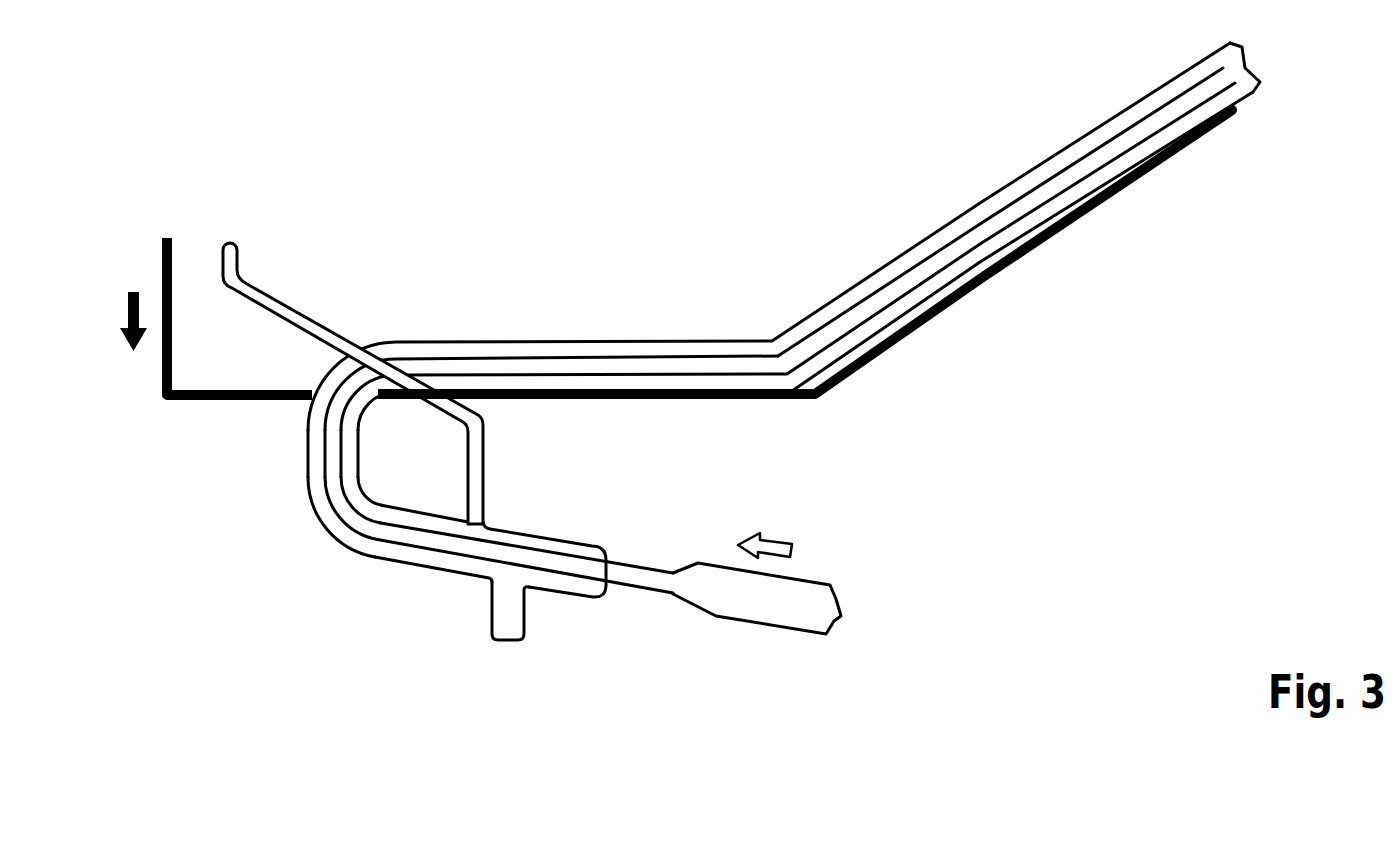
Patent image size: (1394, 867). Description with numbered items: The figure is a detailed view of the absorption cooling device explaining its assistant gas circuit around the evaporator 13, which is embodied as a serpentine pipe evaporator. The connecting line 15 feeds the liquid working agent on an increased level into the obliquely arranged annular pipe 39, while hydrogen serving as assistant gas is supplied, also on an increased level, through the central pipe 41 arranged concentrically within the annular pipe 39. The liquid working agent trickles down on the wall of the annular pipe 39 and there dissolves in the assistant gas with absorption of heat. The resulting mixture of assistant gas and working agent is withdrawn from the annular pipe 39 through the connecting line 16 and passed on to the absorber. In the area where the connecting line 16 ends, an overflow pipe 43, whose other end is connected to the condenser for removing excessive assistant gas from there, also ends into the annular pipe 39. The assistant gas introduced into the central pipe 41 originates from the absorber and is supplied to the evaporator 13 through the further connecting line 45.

The evaporator 13 is at (967, 160).
The connecting line 15 is at (160, 240).
The connecting line 16 is at (490, 623).
The annular pipe 39 is at (1077, 192).
The central pipe 41 is at (1137, 133).
The overflow pipe 43 is at (258, 288).
The further connecting line 45 is at (753, 623).